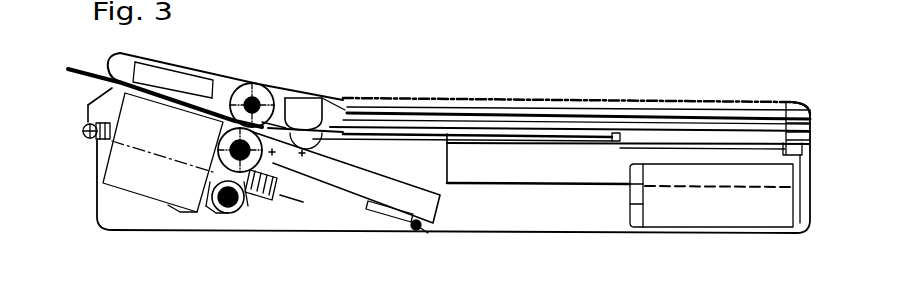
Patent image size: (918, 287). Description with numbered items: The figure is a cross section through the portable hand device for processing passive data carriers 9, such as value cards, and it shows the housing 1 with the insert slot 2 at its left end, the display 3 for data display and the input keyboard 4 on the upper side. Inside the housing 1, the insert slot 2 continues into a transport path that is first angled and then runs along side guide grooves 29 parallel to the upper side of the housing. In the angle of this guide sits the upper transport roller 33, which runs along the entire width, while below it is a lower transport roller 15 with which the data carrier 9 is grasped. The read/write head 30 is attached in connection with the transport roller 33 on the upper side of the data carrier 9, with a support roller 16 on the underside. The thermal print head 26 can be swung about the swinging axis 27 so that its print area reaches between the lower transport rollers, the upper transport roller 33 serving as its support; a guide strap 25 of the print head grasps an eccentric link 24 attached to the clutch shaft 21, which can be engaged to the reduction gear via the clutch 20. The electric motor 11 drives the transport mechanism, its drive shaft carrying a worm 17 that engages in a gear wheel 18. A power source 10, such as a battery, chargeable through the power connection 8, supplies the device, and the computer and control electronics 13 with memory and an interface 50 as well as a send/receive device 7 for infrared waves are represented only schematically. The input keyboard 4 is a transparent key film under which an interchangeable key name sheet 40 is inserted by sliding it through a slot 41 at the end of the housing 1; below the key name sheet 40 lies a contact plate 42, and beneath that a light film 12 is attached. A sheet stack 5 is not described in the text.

The housing 1 is at (507, 217).
The insert slot 2 is at (108, 74).
The display 3 is at (187, 78).
The input keyboard 4 is at (411, 89).
The sheet stack 5 is at (630, 100).
The send/receive device 7 is at (83, 131).
The power connection 8 is at (787, 102).
The data carrier 9 is at (80, 77).
The power source 10 is at (693, 210).
The electric motor 11 is at (113, 170).
The light film 12 is at (467, 106).
The computer and control electronics 13 is at (602, 170).
The lower transport roller 15 is at (225, 143).
The support roller 16 is at (358, 96).
The worm 17 is at (275, 188).
The gear wheel 18 is at (283, 170).
The clutch 20 is at (232, 210).
The clutch shaft 21 is at (253, 203).
The eccentric link 24 is at (203, 193).
The guide strap 25 is at (212, 210).
The thermal print head 26 is at (383, 195).
The swinging axis 27 is at (420, 198).
The side guide grooves 29 is at (526, 128).
The read/write head 30 is at (308, 113).
The upper transport roller 33 is at (265, 92).
The key name sheet 40 is at (578, 118).
The slot 41 is at (803, 100).
The contact plate 42 is at (700, 118).
The interface 50 is at (800, 228).